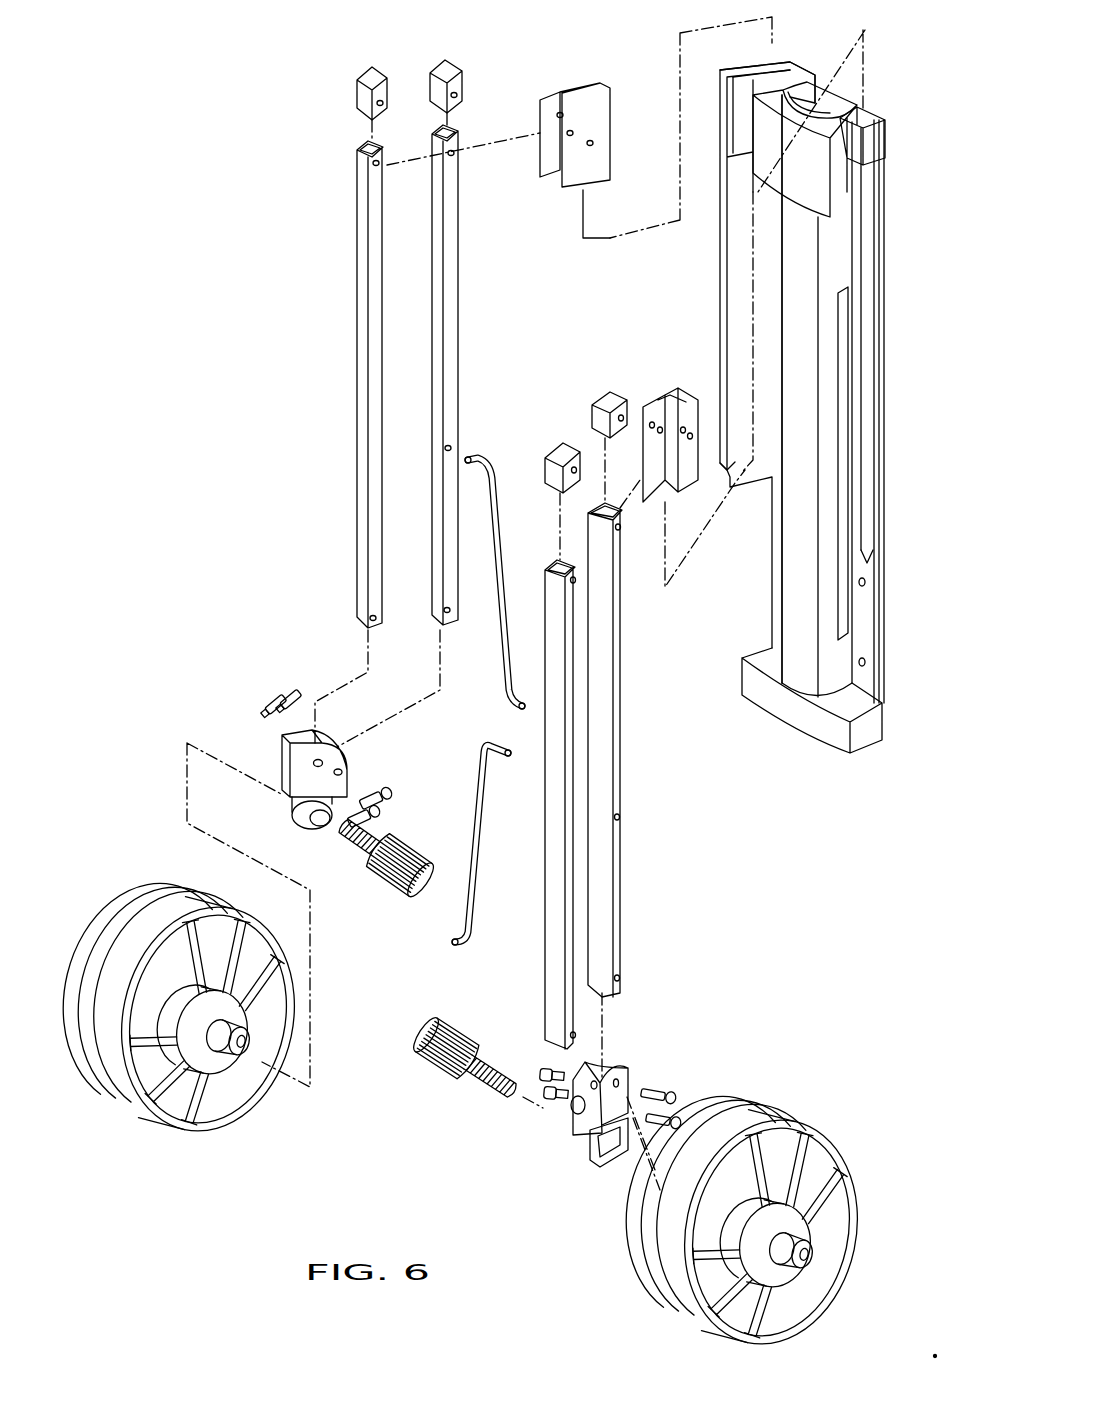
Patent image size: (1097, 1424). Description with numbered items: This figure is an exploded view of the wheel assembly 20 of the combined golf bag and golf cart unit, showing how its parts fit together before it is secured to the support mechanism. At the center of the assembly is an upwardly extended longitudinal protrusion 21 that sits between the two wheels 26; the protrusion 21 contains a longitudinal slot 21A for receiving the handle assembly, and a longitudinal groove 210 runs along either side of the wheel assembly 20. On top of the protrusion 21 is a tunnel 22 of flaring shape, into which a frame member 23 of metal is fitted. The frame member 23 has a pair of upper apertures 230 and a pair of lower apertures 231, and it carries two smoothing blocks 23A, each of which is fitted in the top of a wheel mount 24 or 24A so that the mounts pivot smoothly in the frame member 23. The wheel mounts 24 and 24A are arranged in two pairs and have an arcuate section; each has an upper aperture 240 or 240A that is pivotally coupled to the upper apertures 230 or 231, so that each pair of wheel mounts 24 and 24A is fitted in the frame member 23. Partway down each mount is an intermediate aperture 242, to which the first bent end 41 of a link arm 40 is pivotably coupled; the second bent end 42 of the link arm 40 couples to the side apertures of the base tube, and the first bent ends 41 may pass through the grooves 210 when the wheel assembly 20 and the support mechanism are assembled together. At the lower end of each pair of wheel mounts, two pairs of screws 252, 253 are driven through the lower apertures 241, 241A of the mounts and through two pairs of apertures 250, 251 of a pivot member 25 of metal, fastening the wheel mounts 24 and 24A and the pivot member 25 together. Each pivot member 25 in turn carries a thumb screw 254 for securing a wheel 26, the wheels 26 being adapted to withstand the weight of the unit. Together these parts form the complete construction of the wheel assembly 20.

The wheel assembly 20 is at (883, 636).
The longitudinal protrusion 21 is at (797, 277).
The longitudinal slot 21A is at (822, 97).
The tunnel 22 is at (755, 80).
The longitudinal groove 210 is at (845, 320).
The frame member 23 is at (573, 182).
The smoothing block 23A is at (447, 68).
The upper apertures 230 is at (565, 113).
The lower apertures 231 is at (592, 145).
The wheel mount 24 is at (457, 292).
The wheel mount 24A is at (362, 268).
The upper aperture 240 is at (457, 157).
The upper aperture 240A is at (370, 162).
The lower aperture 241 is at (443, 612).
The lower aperture 241A is at (370, 620).
The intermediate aperture 242 is at (452, 446).
The pivot member 25 is at (300, 782).
The apertures 250 is at (338, 745).
The apertures 251 is at (340, 771).
The screws 252 is at (297, 700).
The screws 253 is at (275, 700).
The thumb screw 254 is at (393, 880).
The wheel 26 is at (152, 913).
The link arm 40 is at (497, 548).
The first bent end 41 is at (478, 463).
The second bent end 42 is at (522, 700).